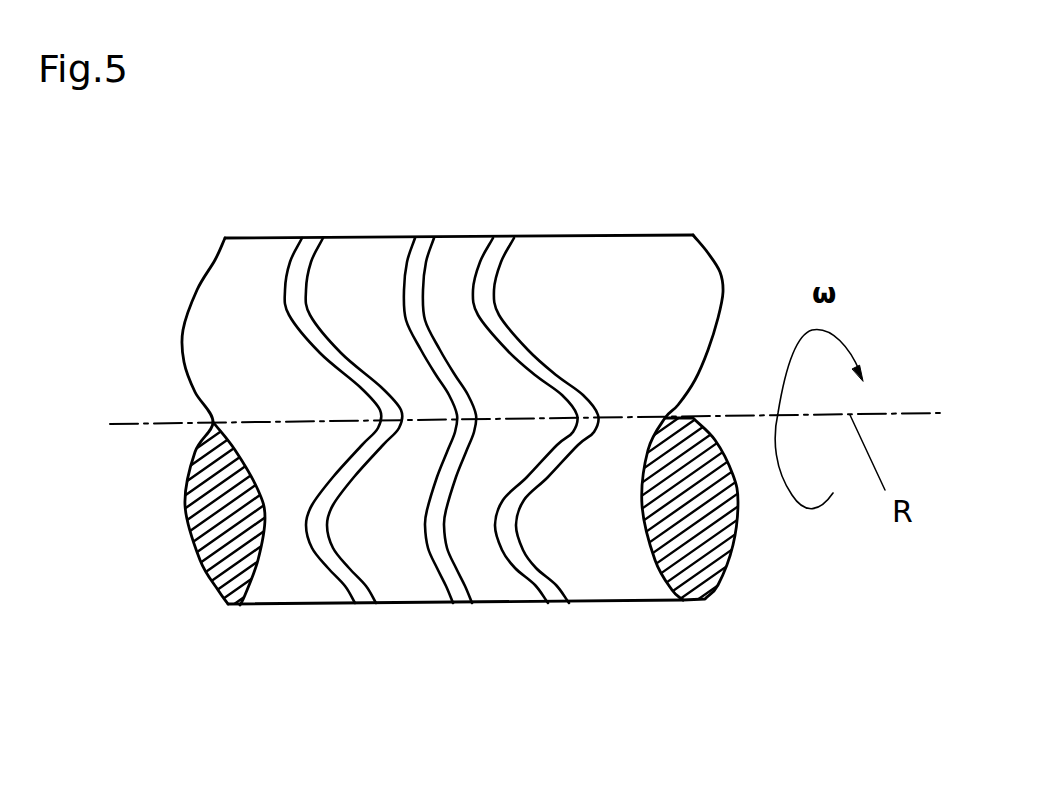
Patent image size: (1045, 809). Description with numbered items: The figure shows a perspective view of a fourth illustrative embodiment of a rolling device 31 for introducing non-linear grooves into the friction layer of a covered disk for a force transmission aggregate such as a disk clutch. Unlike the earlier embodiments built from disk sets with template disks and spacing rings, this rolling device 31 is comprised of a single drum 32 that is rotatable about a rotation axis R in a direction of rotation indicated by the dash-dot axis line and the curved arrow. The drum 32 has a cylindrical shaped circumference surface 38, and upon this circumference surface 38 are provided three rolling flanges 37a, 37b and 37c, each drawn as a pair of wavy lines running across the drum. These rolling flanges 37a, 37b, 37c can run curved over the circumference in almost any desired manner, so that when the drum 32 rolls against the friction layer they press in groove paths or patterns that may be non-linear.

The rolling device 31 is at (775, 190).
The drum 32 is at (637, 578).
The circumference surface 38 is at (273, 605).
The rolling flange 37a is at (355, 583).
The rolling flange 37b is at (450, 572).
The rolling flange 37c is at (540, 573).